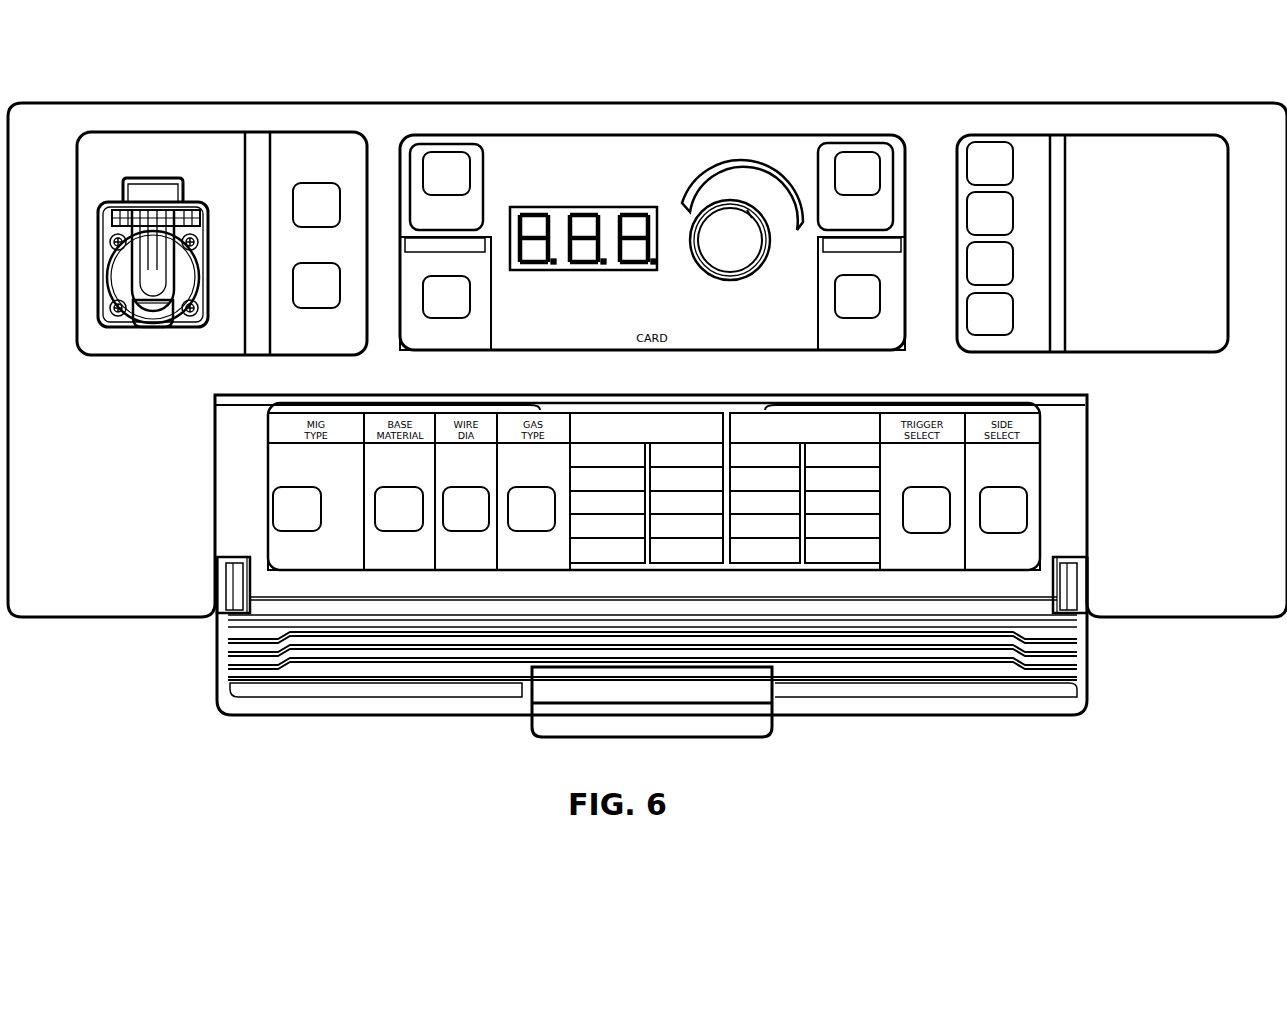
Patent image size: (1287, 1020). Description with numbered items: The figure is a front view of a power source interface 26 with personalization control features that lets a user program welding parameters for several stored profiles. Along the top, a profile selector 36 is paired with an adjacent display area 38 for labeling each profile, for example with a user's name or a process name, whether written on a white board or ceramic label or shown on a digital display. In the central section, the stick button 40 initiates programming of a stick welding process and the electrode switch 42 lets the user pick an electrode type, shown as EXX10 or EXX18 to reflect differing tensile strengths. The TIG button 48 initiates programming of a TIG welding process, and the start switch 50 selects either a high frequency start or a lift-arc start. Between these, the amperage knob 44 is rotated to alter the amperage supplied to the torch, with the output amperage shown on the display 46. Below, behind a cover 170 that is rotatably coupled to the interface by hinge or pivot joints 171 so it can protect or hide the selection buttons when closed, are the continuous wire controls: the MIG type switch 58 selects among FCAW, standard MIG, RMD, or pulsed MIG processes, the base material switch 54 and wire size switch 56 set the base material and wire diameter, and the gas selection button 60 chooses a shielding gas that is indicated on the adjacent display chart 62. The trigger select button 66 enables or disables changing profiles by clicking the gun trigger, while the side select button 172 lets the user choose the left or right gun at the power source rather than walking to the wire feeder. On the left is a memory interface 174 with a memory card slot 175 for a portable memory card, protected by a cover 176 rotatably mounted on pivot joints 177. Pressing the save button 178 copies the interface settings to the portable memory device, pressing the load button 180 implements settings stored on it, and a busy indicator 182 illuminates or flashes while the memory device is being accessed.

The power source interface 26 is at (838, 86).
The profile selector 36 is at (967, 203).
The display area 38 is at (1228, 197).
The stick button 40 is at (472, 185).
The electrode switch 42 is at (472, 287).
The amperage knob 44 is at (748, 272).
The display 46 is at (568, 207).
The TIG button 48 is at (833, 182).
The start switch 50 is at (833, 300).
The base material switch 54 is at (423, 525).
The wire size switch 56 is at (487, 530).
The MIG type switch 58 is at (315, 531).
The gas selection button 60 is at (535, 531).
The display chart 62 is at (715, 563).
The trigger select button 66 is at (903, 530).
The cover 170 is at (1087, 685).
The pivot joints 171 is at (222, 577).
The side select button 172 is at (1022, 490).
The memory interface 174 is at (90, 143).
The memory card slot 175 is at (140, 270).
The cover 176 is at (112, 262).
The pivot joints 177 is at (120, 216).
The save button 178 is at (305, 183).
The load button 180 is at (305, 263).
The busy indicator 182 is at (315, 347).